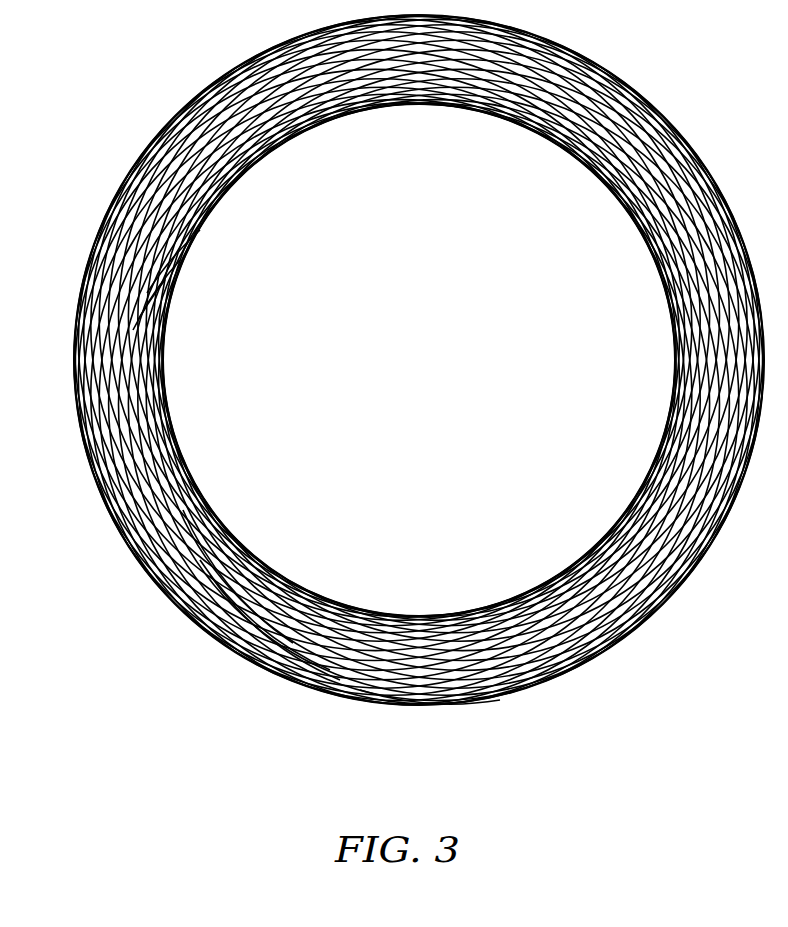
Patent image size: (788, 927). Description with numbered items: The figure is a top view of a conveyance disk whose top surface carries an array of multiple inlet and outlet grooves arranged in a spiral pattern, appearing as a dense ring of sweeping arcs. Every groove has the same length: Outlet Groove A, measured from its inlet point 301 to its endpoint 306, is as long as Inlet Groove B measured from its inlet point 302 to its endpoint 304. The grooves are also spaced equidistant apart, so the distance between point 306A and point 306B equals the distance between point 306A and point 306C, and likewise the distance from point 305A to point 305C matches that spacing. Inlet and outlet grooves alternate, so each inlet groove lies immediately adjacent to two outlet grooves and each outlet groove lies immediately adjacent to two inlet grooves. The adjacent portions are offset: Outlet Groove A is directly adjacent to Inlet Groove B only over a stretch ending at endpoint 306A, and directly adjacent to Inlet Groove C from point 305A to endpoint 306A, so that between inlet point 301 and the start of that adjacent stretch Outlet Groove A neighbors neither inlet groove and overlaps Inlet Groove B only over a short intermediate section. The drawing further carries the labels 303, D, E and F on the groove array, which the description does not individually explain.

The inlet point 301 is at (173, 435).
The inlet point 302 is at (462, 705).
The inner circumference 303 is at (583, 662).
The endpoint 304 is at (183, 480).
The point 305A is at (190, 522).
The point 305C is at (168, 540).
The endpoint 306 is at (427, 693).
The endpoint 306A is at (280, 648).
The point 306B is at (183, 510).
The point 306C is at (285, 652).
The diameter D is at (147, 293).
The diameter E is at (138, 320).
The diameter F is at (133, 330).